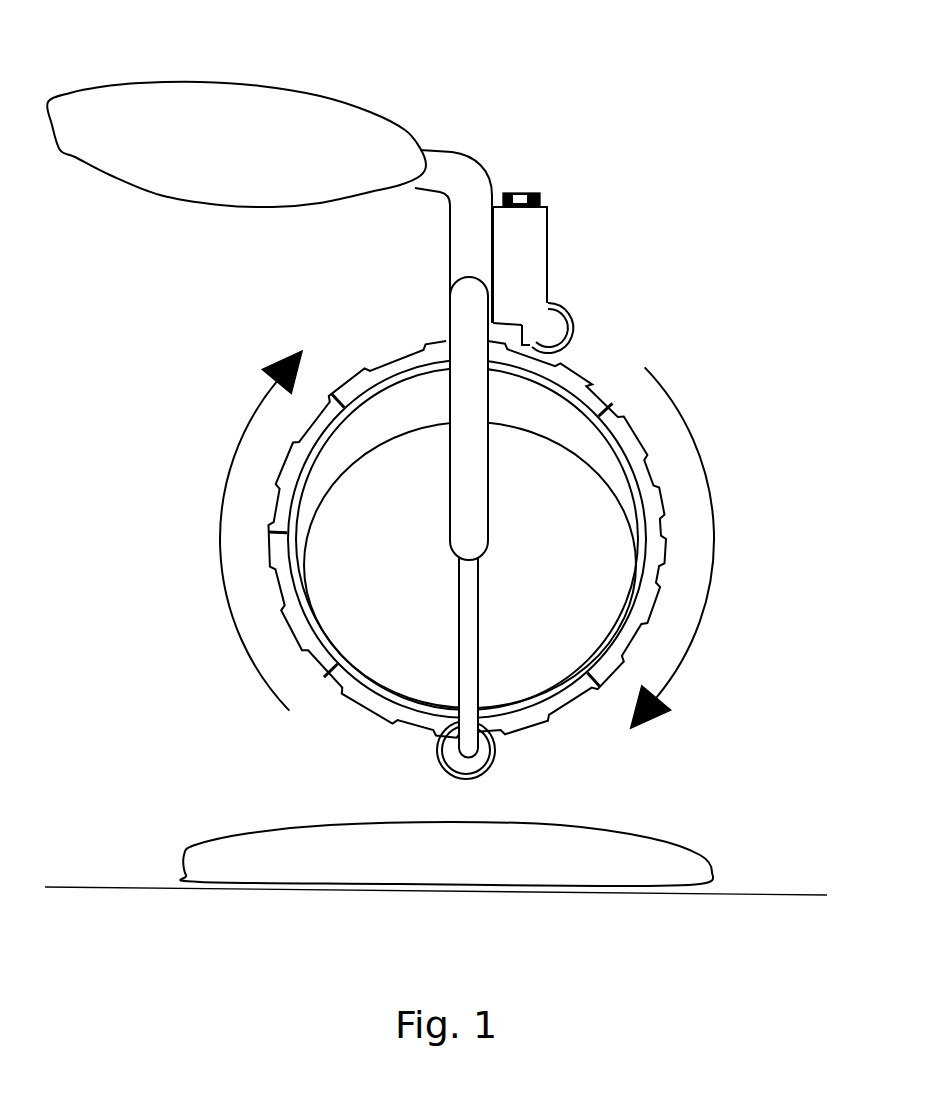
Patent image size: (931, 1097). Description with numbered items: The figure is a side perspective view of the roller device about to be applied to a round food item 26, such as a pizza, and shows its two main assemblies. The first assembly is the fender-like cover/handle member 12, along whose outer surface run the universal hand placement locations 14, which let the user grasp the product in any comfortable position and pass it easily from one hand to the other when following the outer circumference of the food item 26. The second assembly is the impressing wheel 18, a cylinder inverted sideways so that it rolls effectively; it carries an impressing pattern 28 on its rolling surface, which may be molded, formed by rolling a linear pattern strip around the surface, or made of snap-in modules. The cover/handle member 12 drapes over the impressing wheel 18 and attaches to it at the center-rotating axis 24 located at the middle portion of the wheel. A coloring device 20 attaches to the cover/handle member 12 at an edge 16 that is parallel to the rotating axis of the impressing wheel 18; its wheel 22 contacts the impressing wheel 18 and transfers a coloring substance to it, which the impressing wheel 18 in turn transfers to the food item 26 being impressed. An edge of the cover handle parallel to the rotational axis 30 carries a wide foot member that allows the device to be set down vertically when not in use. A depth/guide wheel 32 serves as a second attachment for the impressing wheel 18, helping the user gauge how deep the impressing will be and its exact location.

The cover/handle member 12 is at (540, 412).
The universal hand placement locations 14 is at (210, 140).
The edge 16 is at (452, 173).
The impressing wheel 18 is at (580, 598).
The coloring device 20 is at (520, 230).
The wheel 22 is at (572, 312).
The center-rotating axis 24 is at (450, 553).
The round food item 26 is at (607, 870).
The impressing pattern 28 is at (288, 455).
The rotational axis 30 is at (478, 645).
The depth/guide wheel 32 is at (492, 768).